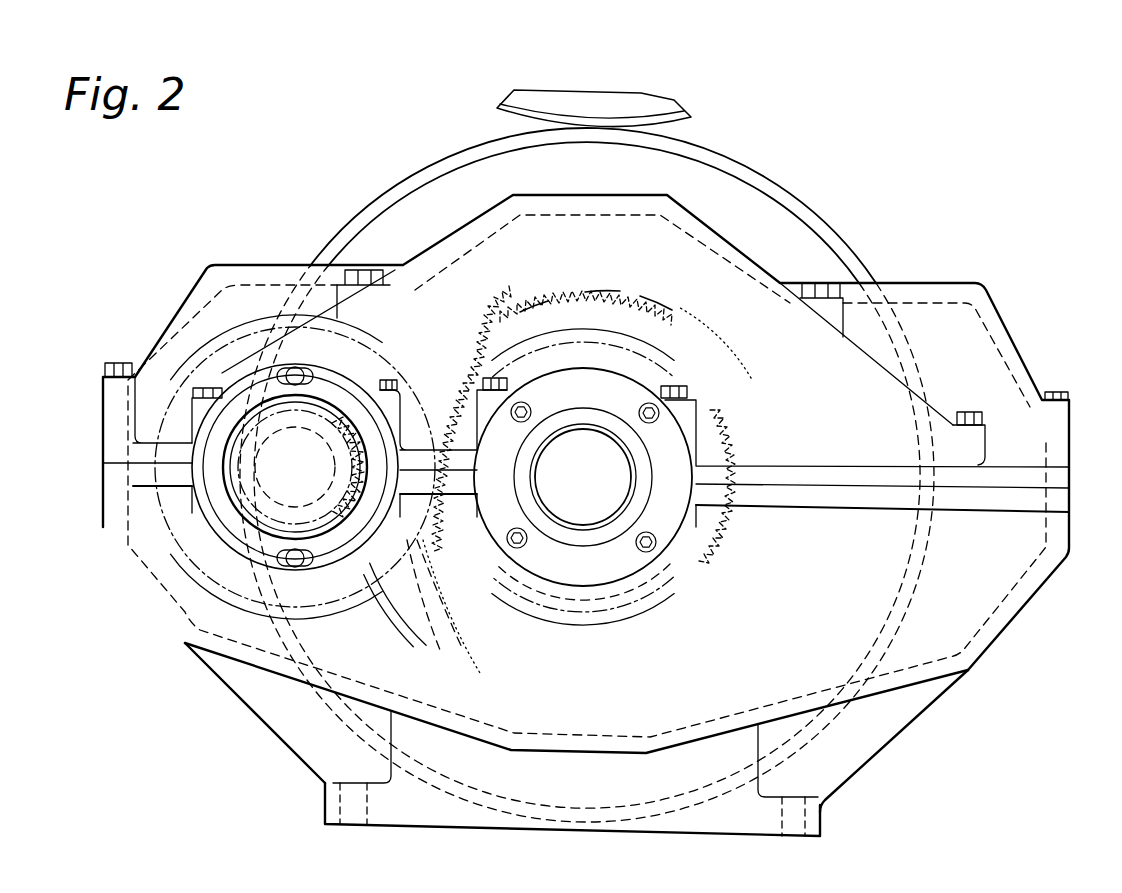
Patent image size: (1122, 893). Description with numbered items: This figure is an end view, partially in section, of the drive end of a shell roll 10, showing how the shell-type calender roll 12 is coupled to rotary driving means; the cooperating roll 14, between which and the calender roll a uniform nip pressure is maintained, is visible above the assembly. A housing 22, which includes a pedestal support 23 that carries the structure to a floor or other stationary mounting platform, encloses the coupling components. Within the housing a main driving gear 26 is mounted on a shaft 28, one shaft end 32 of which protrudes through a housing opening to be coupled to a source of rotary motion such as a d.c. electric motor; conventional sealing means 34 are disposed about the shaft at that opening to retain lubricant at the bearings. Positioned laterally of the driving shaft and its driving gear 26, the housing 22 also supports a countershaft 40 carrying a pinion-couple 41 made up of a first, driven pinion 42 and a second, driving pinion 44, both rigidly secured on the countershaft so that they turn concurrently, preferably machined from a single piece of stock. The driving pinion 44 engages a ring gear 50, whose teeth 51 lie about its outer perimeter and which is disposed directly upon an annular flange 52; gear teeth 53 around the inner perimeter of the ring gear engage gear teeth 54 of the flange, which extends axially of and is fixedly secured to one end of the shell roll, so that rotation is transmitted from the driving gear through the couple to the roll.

The shell roll 10 is at (457, 117).
The shell-type calender roll 12 is at (342, 226).
The cooperating roll 14 is at (555, 95).
The housing 22 is at (918, 716).
The pedestal support 23 is at (823, 823).
The main driving gear 26 is at (489, 308).
The shaft 28 is at (592, 423).
The shaft end 32 is at (606, 436).
The sealing means 34 is at (577, 588).
The countershaft 40 is at (295, 571).
The pinion-couple 41 is at (276, 491).
The first pinion 42 is at (404, 370).
The second pinion 44 is at (345, 602).
The ring gear 50 is at (410, 610).
The teeth 51 is at (372, 594).
The annular flange 52 is at (650, 312).
The gear teeth 53 is at (540, 300).
The gear teeth 54 is at (606, 298).